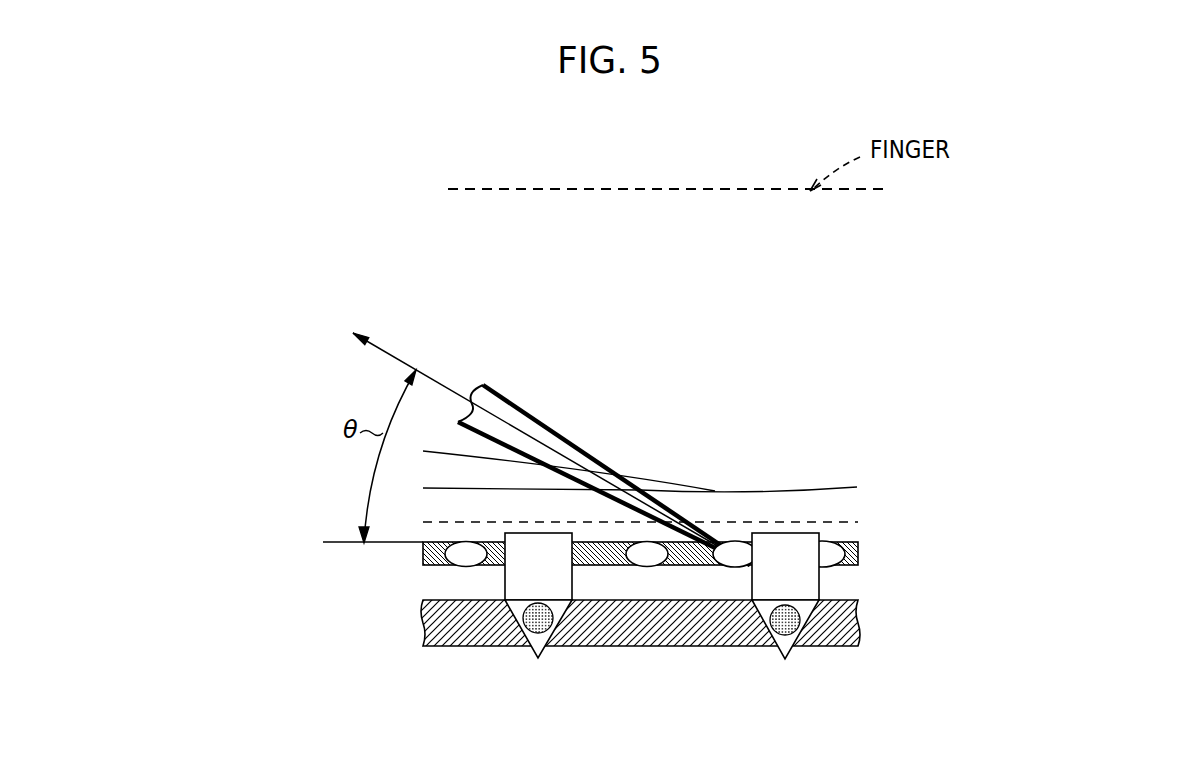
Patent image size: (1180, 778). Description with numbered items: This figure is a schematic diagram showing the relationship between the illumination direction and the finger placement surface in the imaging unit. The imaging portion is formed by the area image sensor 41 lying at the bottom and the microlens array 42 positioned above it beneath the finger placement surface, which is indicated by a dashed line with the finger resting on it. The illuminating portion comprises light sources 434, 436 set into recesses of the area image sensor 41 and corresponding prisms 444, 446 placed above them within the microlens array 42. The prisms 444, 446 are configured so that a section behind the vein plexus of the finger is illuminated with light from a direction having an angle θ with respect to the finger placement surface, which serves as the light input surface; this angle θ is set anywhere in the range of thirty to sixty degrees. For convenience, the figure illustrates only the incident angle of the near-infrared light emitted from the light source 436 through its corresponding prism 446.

The area image sensor 41 is at (858, 627).
The microlens array 42 is at (858, 553).
The prism 444 is at (572, 586).
The prism 446 is at (819, 587).
The light source 434 is at (550, 636).
The light source 436 is at (793, 627).